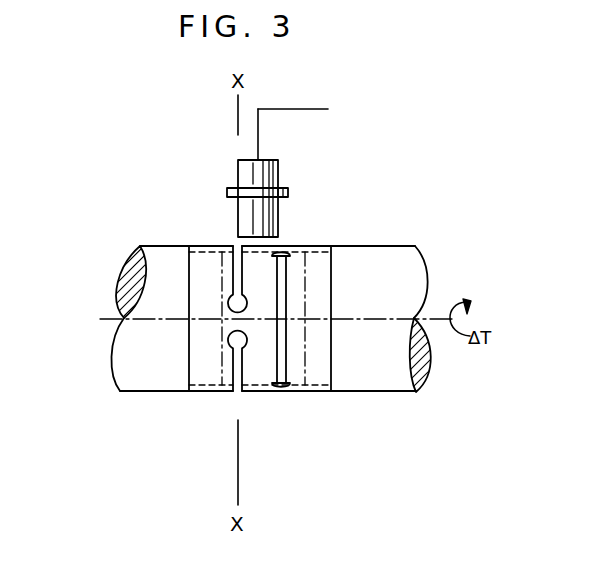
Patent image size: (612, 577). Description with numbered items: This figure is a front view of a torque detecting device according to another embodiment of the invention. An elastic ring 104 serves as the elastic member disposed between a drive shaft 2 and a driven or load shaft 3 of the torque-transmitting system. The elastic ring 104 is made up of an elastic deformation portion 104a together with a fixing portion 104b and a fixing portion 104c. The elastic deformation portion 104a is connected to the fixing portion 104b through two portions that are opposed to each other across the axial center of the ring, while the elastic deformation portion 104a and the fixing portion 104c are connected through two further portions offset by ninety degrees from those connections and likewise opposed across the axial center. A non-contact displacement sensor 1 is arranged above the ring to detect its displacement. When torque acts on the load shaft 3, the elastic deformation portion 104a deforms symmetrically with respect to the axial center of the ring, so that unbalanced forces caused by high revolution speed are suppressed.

The non-contact displacement sensor 1 is at (242, 222).
The drive shaft 2 is at (150, 378).
The load shaft 3 is at (385, 387).
The elastic ring 104 is at (359, 434).
The elastic deformation portion 104a is at (257, 383).
The fixing portion 104b is at (317, 390).
The fixing portion 104c is at (210, 378).